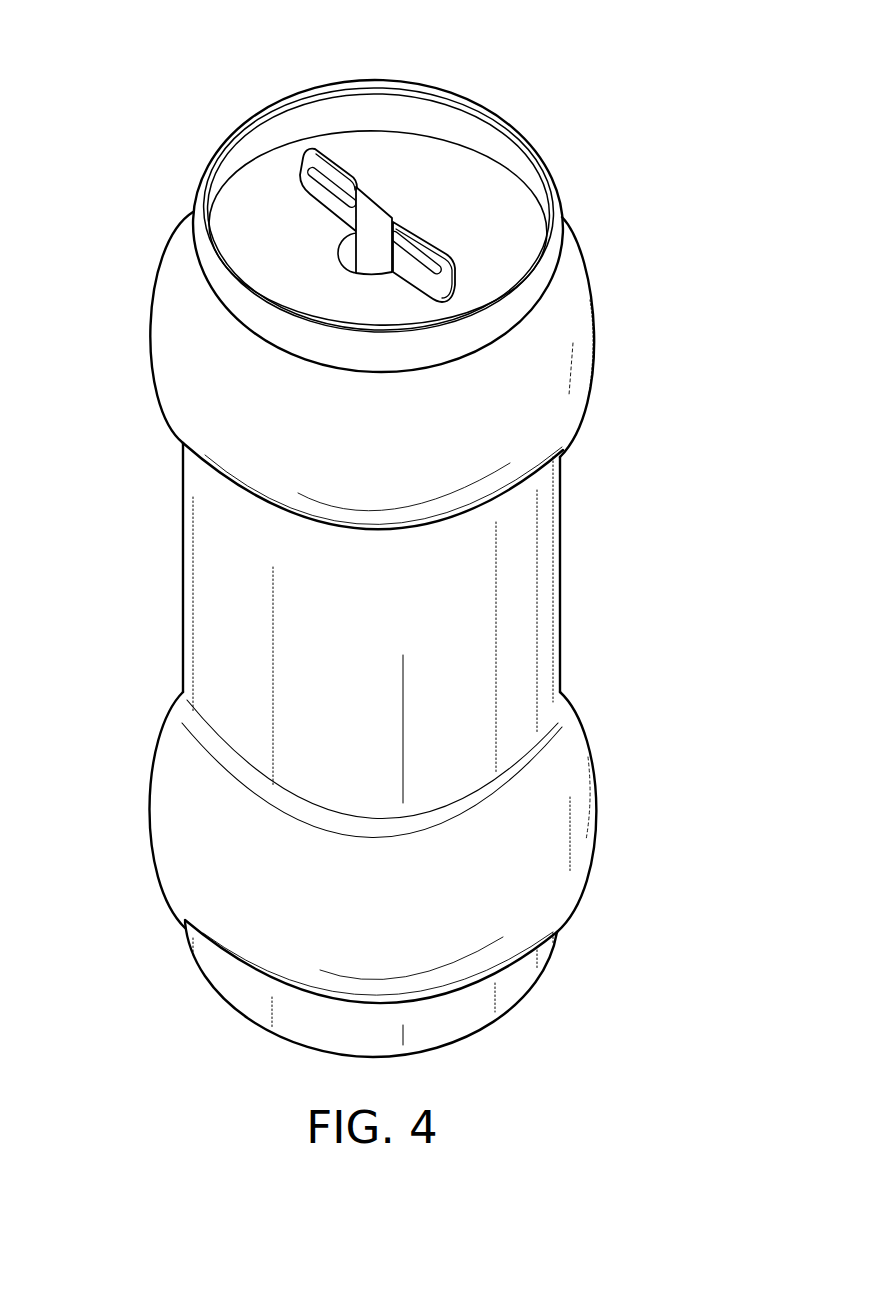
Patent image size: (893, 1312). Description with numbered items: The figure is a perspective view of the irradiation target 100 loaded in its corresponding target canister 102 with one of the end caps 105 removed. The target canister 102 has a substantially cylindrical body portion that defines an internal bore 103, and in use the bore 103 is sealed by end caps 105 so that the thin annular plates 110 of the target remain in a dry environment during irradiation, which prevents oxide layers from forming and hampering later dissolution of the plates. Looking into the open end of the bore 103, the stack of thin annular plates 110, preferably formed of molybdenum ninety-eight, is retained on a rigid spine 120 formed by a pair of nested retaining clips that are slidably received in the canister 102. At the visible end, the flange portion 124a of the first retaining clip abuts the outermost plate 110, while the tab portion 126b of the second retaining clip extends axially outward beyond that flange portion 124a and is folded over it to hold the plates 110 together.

The irradiation target 100 is at (612, 596).
The target canister 102 is at (183, 577).
The internal bore 103 is at (390, 114).
The end cap 105 is at (455, 1042).
The thin annular plate 110 is at (519, 222).
The rigid spine 120 is at (323, 248).
The flange portion of the first retaining clip 124a is at (466, 284).
The tab portion of the second retaining clip 126b is at (395, 201).